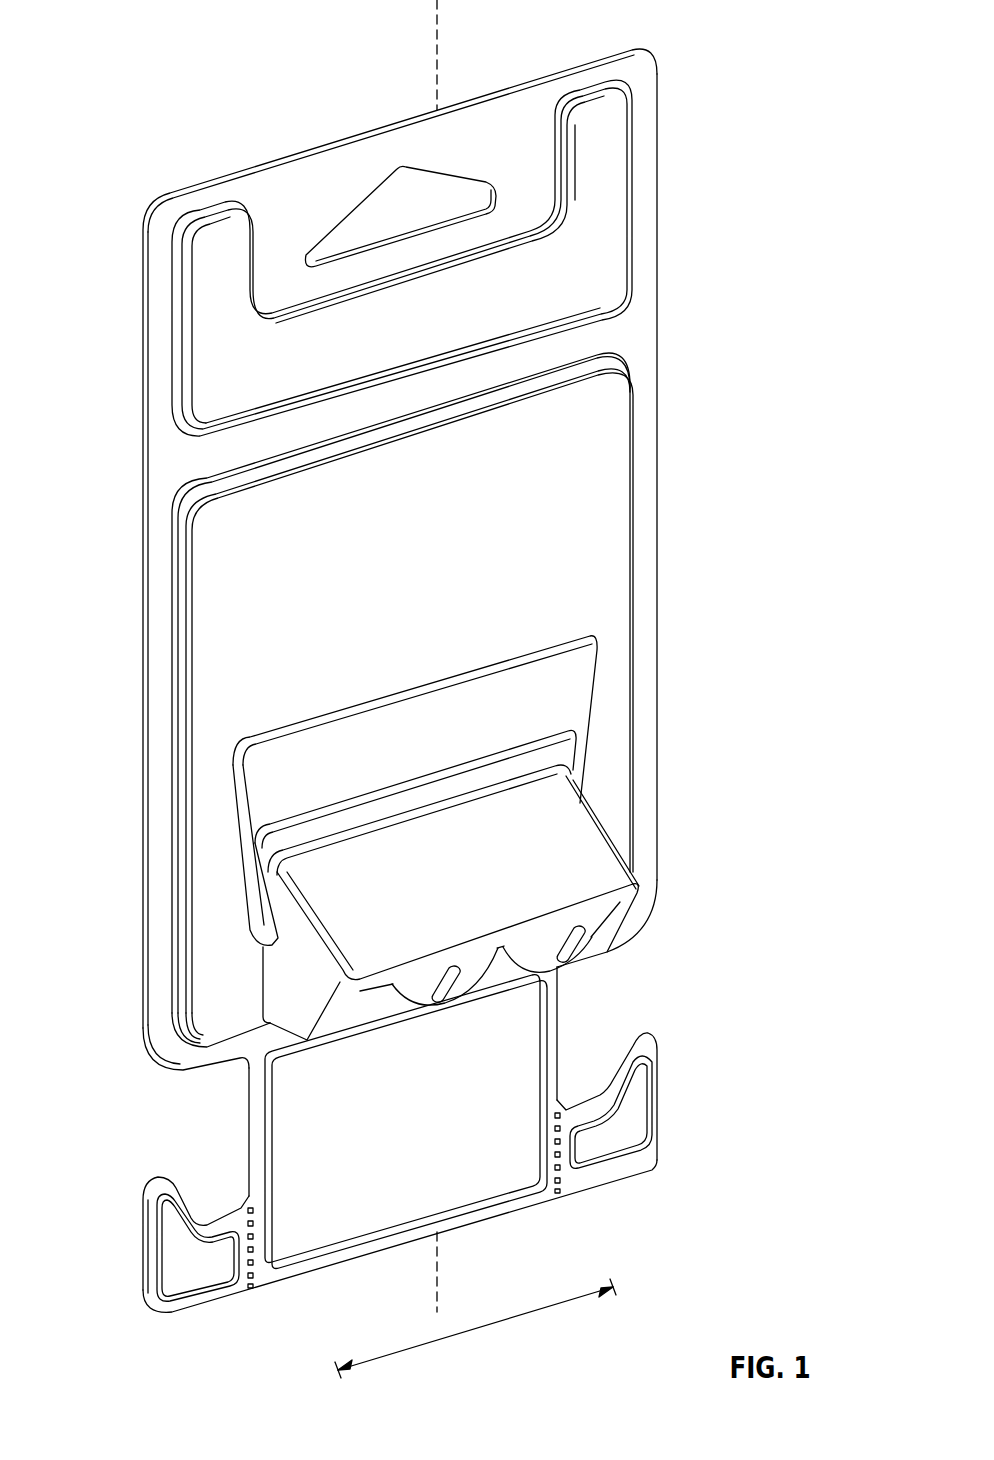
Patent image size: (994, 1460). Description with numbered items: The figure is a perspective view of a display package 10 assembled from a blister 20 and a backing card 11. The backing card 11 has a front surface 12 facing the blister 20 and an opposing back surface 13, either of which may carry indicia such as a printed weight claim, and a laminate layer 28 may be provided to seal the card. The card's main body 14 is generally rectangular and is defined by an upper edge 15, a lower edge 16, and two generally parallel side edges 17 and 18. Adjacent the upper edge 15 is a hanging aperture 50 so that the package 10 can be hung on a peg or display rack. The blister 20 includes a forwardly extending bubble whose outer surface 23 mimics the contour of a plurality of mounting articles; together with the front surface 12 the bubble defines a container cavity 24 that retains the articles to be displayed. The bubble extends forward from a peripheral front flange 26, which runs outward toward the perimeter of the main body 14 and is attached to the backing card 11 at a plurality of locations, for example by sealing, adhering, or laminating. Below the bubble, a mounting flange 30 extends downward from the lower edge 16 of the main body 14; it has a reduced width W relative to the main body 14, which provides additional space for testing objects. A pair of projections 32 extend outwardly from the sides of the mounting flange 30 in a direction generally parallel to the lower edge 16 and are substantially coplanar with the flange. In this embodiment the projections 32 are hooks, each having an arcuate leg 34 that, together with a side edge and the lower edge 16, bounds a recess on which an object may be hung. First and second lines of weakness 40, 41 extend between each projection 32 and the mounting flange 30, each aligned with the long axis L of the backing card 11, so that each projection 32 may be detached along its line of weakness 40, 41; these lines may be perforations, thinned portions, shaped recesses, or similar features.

The package 10 is at (682, 43).
The backing card 11 is at (143, 270).
The front surface 12 is at (163, 458).
The back surface 13 is at (657, 428).
The main body 14 is at (650, 600).
The upper edge 15 is at (262, 165).
The lower edge 16 is at (187, 1073).
The side edge 17 is at (160, 740).
The side edge 18 is at (660, 777).
The blister 20 is at (572, 765).
The outer surface 23 is at (355, 1007).
The container cavity 24 is at (300, 957).
The peripheral front flange 26 is at (235, 942).
The laminate layer 28 is at (612, 183).
The mounting flange 30 is at (360, 1213).
The projections 32 is at (628, 1143).
The arcuate leg 34 is at (655, 1038).
The first line of weakness 40 is at (250, 1288).
The second line of weakness 41 is at (561, 1193).
The hanging aperture 50 is at (388, 203).
The long axis L is at (437, 70).
The width W is at (498, 1322).